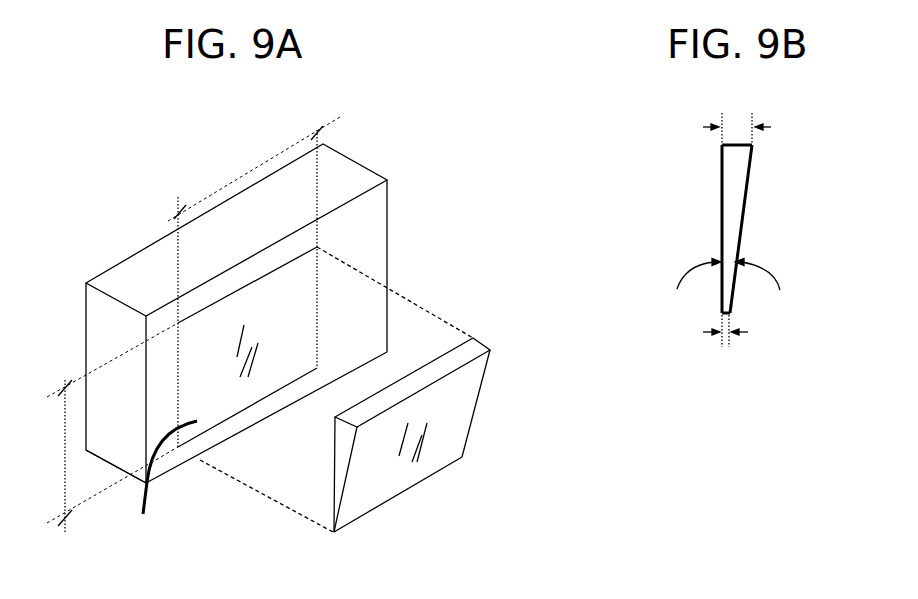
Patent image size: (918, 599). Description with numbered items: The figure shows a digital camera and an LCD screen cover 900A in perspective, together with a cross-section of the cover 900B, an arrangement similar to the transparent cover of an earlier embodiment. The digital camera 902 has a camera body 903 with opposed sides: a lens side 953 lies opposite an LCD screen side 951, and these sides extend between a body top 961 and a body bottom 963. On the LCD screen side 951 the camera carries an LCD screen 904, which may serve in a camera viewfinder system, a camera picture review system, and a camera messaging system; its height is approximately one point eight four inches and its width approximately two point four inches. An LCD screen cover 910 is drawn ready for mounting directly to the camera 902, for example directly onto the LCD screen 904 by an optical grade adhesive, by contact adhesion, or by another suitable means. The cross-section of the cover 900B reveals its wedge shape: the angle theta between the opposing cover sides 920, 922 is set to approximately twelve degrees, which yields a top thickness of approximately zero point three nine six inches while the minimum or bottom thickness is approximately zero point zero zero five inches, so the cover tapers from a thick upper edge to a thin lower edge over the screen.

In FIG. 9A, the digital camera and LCD screen cover 900A is at (387, 92).
In FIG. 9A, the digital camera 902 is at (372, 162).
In FIG. 9A, the camera body 903 is at (389, 237).
In FIG. 9A, the LCD screen side 951 is at (360, 327).
In FIG. 9A, the body top 961 is at (155, 263).
In FIG. 9A, the lens side 953 is at (84, 313).
In FIG. 9A, the LCD screen 904 is at (160, 484).
In FIG. 9A, the body bottom 963 is at (87, 452).
In FIG. 9A, the LCD screen cover 910 is at (440, 446).
In FIG. 9B, the LCD screen cover 910 is at (712, 230).
In FIG. 9B, the LCD screen cover cross-section 900B is at (740, 438).
In FIG. 9B, the first cover side 920 is at (720, 213).
In FIG. 9B, the second cover side 922 is at (741, 228).